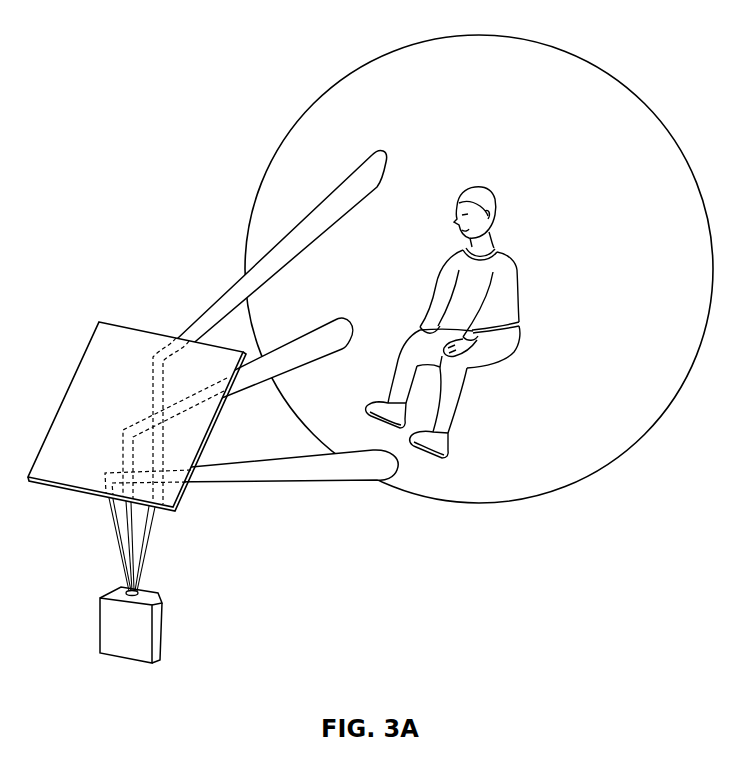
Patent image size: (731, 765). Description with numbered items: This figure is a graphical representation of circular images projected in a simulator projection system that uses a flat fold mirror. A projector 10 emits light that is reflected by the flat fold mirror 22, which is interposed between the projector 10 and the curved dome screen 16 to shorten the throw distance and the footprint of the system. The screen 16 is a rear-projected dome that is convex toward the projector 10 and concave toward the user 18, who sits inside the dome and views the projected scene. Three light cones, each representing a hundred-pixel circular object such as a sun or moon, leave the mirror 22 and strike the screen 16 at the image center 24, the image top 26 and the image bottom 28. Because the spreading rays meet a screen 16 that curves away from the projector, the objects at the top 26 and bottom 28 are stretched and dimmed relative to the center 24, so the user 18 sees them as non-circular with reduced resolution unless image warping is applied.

The projector 10 is at (163, 630).
The screen 16 is at (308, 105).
The user 18 is at (503, 250).
The flat fold mirror 22 is at (66, 397).
The image center 24 is at (338, 318).
The image top 26 is at (351, 167).
The image bottom 28 is at (352, 447).